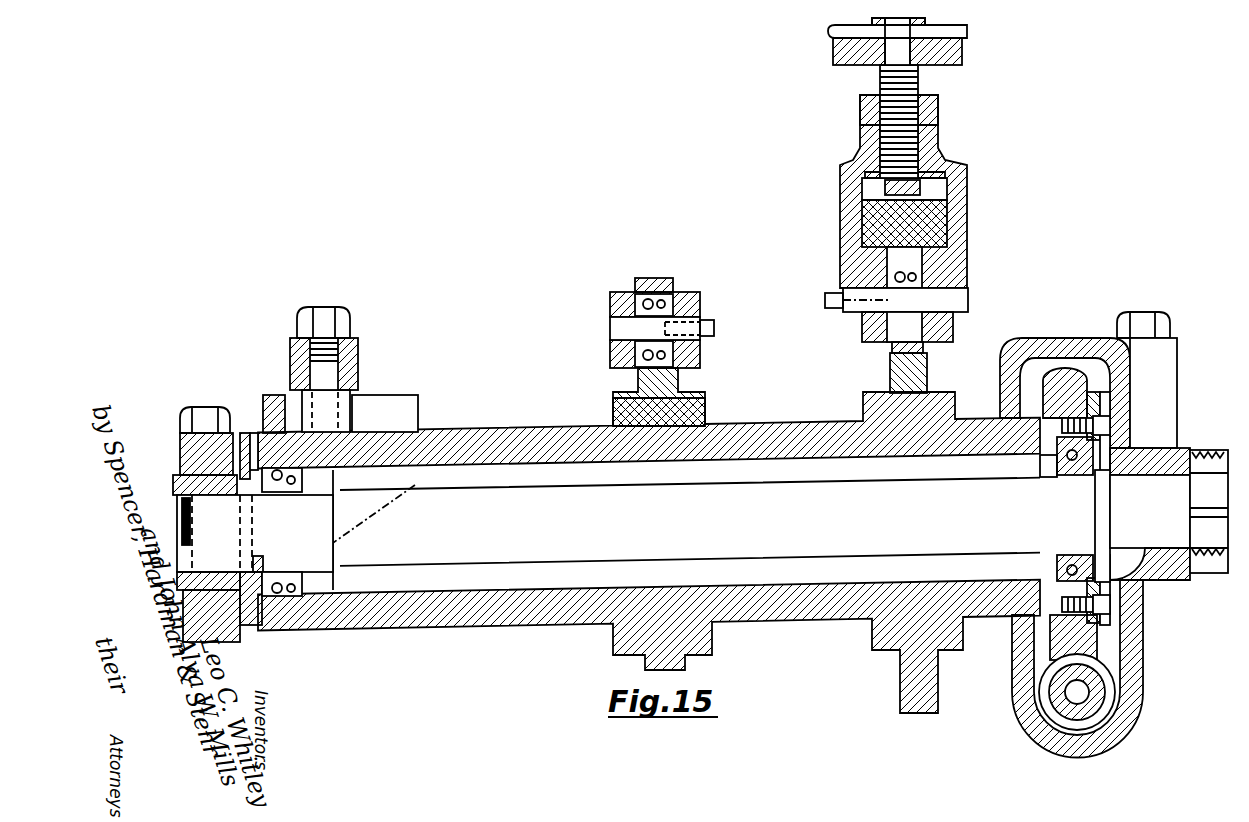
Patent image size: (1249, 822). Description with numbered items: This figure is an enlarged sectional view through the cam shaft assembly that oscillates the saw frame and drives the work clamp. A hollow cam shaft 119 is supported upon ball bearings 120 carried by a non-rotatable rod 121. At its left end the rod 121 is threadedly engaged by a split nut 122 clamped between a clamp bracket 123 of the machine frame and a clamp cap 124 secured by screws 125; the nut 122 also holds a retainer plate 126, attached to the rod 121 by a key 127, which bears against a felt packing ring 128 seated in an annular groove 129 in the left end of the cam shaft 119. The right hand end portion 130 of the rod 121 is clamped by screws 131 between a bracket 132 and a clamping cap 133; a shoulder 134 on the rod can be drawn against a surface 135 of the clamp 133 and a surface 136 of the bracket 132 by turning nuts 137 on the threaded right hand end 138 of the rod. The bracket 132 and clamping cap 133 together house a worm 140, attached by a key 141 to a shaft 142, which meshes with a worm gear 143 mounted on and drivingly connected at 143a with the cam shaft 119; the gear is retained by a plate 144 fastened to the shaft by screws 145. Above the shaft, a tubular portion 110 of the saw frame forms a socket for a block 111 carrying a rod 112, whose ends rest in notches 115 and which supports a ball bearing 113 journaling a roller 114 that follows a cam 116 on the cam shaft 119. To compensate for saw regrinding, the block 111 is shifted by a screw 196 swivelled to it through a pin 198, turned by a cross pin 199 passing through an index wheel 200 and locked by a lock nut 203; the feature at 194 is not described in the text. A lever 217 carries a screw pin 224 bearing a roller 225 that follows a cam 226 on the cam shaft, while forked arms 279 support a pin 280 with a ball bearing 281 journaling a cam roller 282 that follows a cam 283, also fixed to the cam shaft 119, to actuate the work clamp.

The tubular portion 110 is at (846, 173).
The block 111 is at (940, 220).
The rod 112 is at (946, 300).
The ball bearing 113 is at (916, 278).
The roller 114 is at (922, 346).
The notches 115 is at (963, 324).
The cam 116 is at (926, 374).
The cam shaft 119 is at (765, 426).
The ball bearings 120 is at (283, 492).
The rod 121 is at (830, 498).
The split nut 122 is at (175, 478).
The clamp bracket 123 is at (218, 645).
The clamp cap 124 is at (238, 430).
The screws 125 is at (205, 406).
The retainer plate 126 is at (258, 432).
The key 127 is at (256, 556).
The felt packing ring 128 is at (276, 628).
The annular groove 129 is at (300, 628).
The right hand end portion 130 is at (1172, 566).
The screws 131 is at (1140, 318).
The bracket 132 is at (1138, 656).
The clamping cap 133 is at (1126, 388).
The shoulder 134 is at (1110, 488).
The surface 135 is at (1116, 460).
The surface 136 is at (1170, 554).
The nuts 137 is at (1232, 578).
The right hand end of the rod 138 is at (1218, 556).
The worm 140 is at (1106, 686).
The key 141 is at (1092, 694).
The shaft 142 is at (1084, 700).
The worm gear 143 is at (1066, 388).
The driving connection 143a is at (1052, 622).
The plate 144 is at (1096, 406).
The screws 145 is at (1106, 428).
The bore 194 is at (848, 204).
The screw 196 is at (905, 86).
The pin 198 is at (922, 190).
The cross pin 199 is at (968, 30).
The index wheel 200 is at (962, 54).
The lock nut 203 is at (940, 112).
The lever 217 is at (350, 362).
The screw pin 224 is at (340, 323).
The roller 225 is at (348, 396).
The cam 226 is at (406, 411).
The arms 279 is at (696, 352).
The pin 280 is at (622, 327).
The ball bearing 281 is at (672, 304).
The cam roller 282 is at (656, 284).
The cam 283 is at (686, 410).